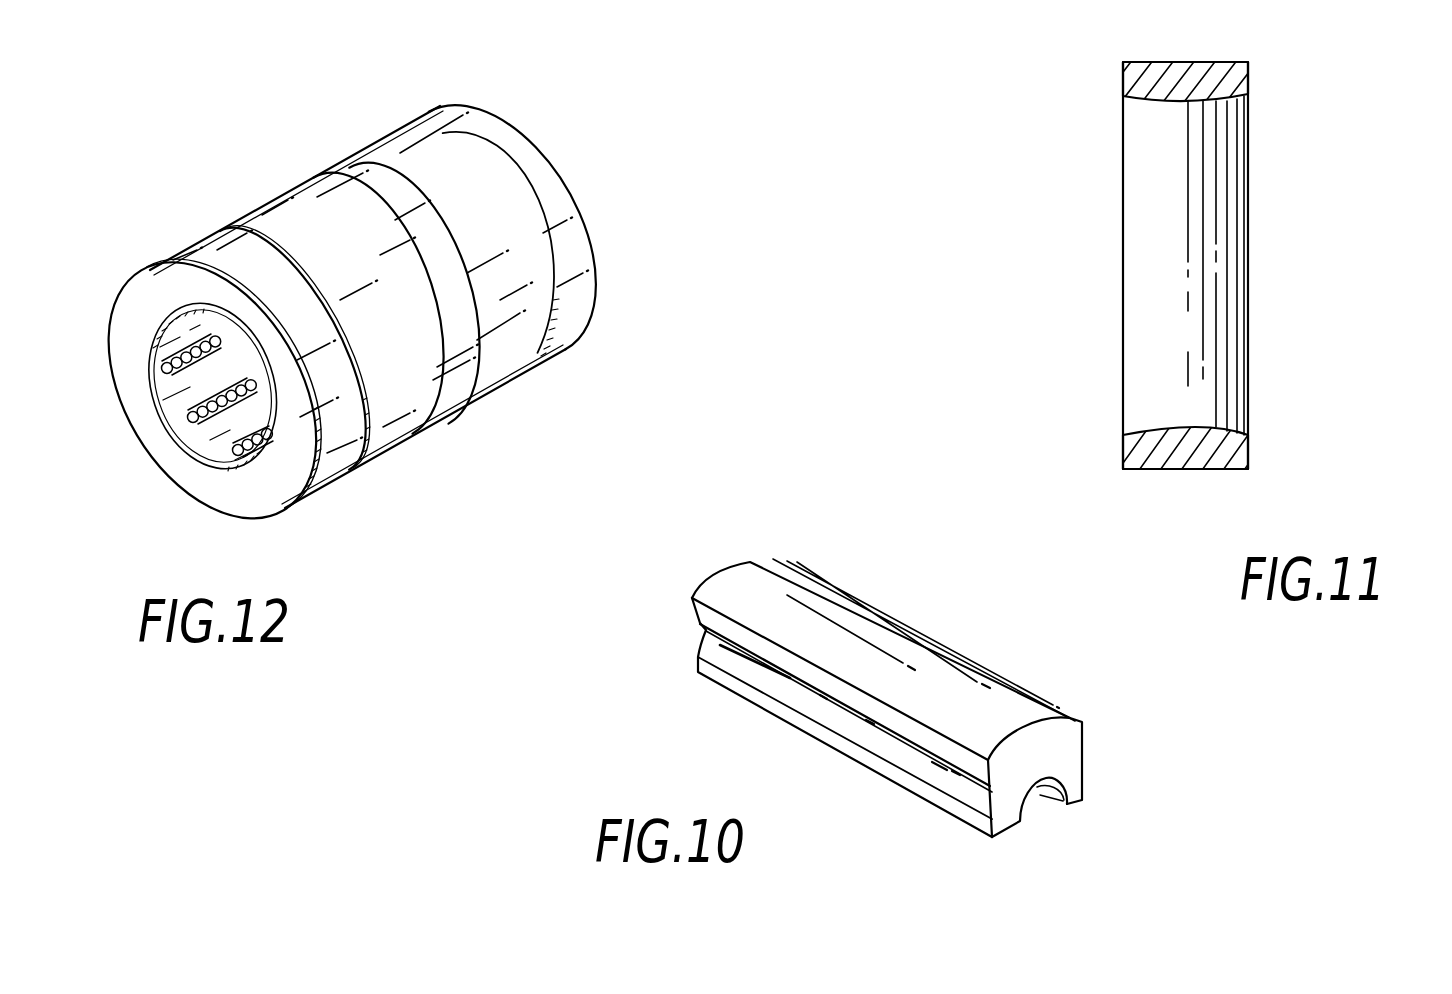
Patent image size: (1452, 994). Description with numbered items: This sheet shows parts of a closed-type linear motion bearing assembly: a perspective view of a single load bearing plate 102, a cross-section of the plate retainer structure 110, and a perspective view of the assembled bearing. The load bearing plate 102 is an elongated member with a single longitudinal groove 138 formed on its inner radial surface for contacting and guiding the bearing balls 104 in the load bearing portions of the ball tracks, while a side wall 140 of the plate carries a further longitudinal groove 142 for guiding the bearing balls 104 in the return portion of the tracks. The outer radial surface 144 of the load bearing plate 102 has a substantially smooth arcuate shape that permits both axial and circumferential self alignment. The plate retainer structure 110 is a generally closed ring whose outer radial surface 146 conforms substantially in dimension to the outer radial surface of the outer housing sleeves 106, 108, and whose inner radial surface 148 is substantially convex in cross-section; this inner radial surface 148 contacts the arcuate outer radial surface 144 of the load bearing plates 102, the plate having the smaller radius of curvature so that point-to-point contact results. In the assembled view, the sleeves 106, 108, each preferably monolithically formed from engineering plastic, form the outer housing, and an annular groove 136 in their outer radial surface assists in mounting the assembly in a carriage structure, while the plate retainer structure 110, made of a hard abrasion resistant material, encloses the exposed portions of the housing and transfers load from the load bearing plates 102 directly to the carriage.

In FIG. 10, the load bearing plate 102 is at (1064, 748).
In FIG. 12, the bearing balls 104 is at (233, 457).
In FIG. 12, the outer housing sleeve 106 is at (330, 447).
In FIG. 12, the outer housing sleeve 108 is at (540, 177).
In FIG. 12, the plate retainer structure 110 is at (447, 393).
In FIG. 11, the plate retainer structure 110 is at (1248, 221).
In FIG. 12, the annular groove 136 is at (278, 252).
In FIG. 10, the longitudinal groove 138 is at (1027, 800).
In FIG. 10, the side wall 140 is at (878, 765).
In FIG. 10, the longitudinal groove 142 is at (743, 663).
In FIG. 10, the outer radial surface 144 is at (880, 627).
In FIG. 11, the outer radial surface 146 is at (1179, 60).
In FIG. 11, the inner radial surface 148 is at (1182, 427).